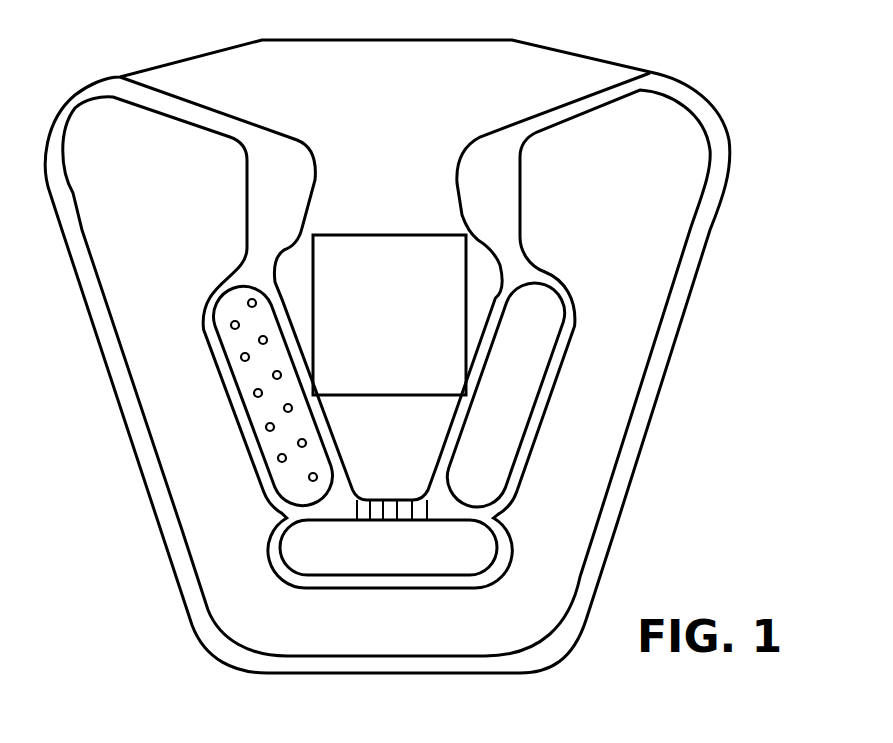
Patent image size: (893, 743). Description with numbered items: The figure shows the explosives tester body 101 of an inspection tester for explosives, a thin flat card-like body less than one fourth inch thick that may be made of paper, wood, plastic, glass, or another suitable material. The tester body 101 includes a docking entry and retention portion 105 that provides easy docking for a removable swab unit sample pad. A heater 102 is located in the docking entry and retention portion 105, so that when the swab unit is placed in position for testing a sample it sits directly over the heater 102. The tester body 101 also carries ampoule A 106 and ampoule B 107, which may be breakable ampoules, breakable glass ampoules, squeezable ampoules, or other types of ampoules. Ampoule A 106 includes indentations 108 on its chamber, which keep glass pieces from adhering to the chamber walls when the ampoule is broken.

The explosives tester body 101 is at (635, 42).
The heater 102 is at (413, 305).
The docking entry and retention portion 105 is at (413, 110).
The ampoule A 106 is at (218, 290).
The ampoule B 107 is at (540, 312).
The indentations 108 is at (245, 360).